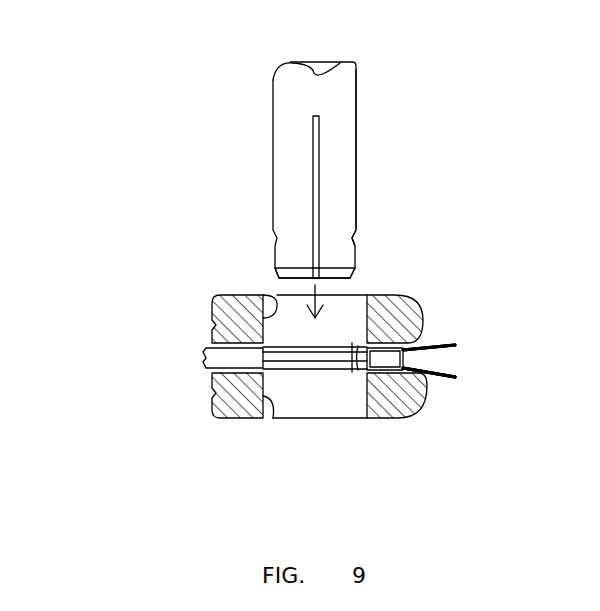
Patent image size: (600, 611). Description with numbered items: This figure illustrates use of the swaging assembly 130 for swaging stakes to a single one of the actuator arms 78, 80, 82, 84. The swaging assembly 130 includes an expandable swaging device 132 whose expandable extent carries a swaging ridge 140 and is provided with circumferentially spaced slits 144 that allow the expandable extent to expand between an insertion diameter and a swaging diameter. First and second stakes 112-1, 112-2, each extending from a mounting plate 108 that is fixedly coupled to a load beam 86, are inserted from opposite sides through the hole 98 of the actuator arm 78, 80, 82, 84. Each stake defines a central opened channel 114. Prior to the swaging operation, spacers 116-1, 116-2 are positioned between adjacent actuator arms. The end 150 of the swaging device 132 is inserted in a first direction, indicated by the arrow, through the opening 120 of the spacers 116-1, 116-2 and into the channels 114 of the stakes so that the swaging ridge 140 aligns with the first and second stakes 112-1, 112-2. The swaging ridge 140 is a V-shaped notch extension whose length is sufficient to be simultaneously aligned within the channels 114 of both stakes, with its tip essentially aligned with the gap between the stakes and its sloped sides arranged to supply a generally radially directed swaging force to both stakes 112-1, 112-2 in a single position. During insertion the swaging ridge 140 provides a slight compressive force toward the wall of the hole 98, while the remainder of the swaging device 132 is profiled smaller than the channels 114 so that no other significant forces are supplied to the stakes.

The swaging assembly 130 is at (380, 115).
The expandable swaging device 132 is at (357, 163).
The swaging ridge 140 is at (358, 237).
The slits 144 is at (316, 130).
The end of the swaging device 150 is at (277, 273).
The opening of spacers 120 is at (272, 296).
The spacer 116-1 is at (227, 323).
The spacer 116-2 is at (223, 393).
The first stake 112-1 is at (368, 342).
The second stake 112-2 is at (361, 373).
The channel 114 is at (268, 362).
The hole 98 is at (352, 366).
The mounting plate 108 is at (408, 347).
The load beam 86 is at (450, 366).
The actuator arm 78 is at (420, 371).
The actuator arm 80 is at (429, 347).
The actuator arm 82 is at (429, 372).
The actuator arm 84 is at (429, 372).